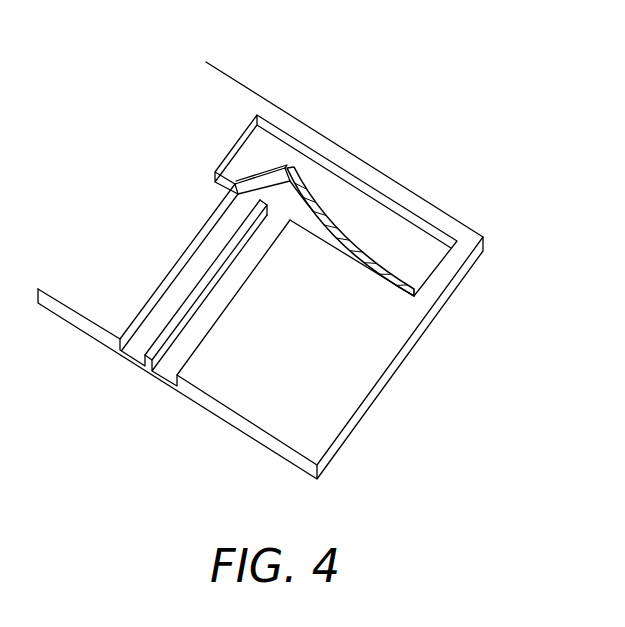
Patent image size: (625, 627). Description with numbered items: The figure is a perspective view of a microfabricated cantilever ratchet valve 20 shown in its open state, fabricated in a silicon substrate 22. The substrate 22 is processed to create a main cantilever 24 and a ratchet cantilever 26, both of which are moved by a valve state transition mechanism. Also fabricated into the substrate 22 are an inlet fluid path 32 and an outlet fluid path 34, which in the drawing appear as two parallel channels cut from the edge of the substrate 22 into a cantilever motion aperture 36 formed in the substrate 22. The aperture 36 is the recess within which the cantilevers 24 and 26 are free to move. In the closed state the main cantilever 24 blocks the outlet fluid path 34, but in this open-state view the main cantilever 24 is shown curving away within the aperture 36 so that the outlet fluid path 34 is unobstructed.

The microfabricated cantilever ratchet valve 20 is at (450, 333).
The silicon substrate 22 is at (233, 88).
The main cantilever 24 is at (318, 208).
The ratchet cantilever 26 is at (248, 178).
The inlet fluid path 32 is at (137, 352).
The outlet fluid path 34 is at (171, 368).
The cantilever motion aperture 36 is at (405, 237).